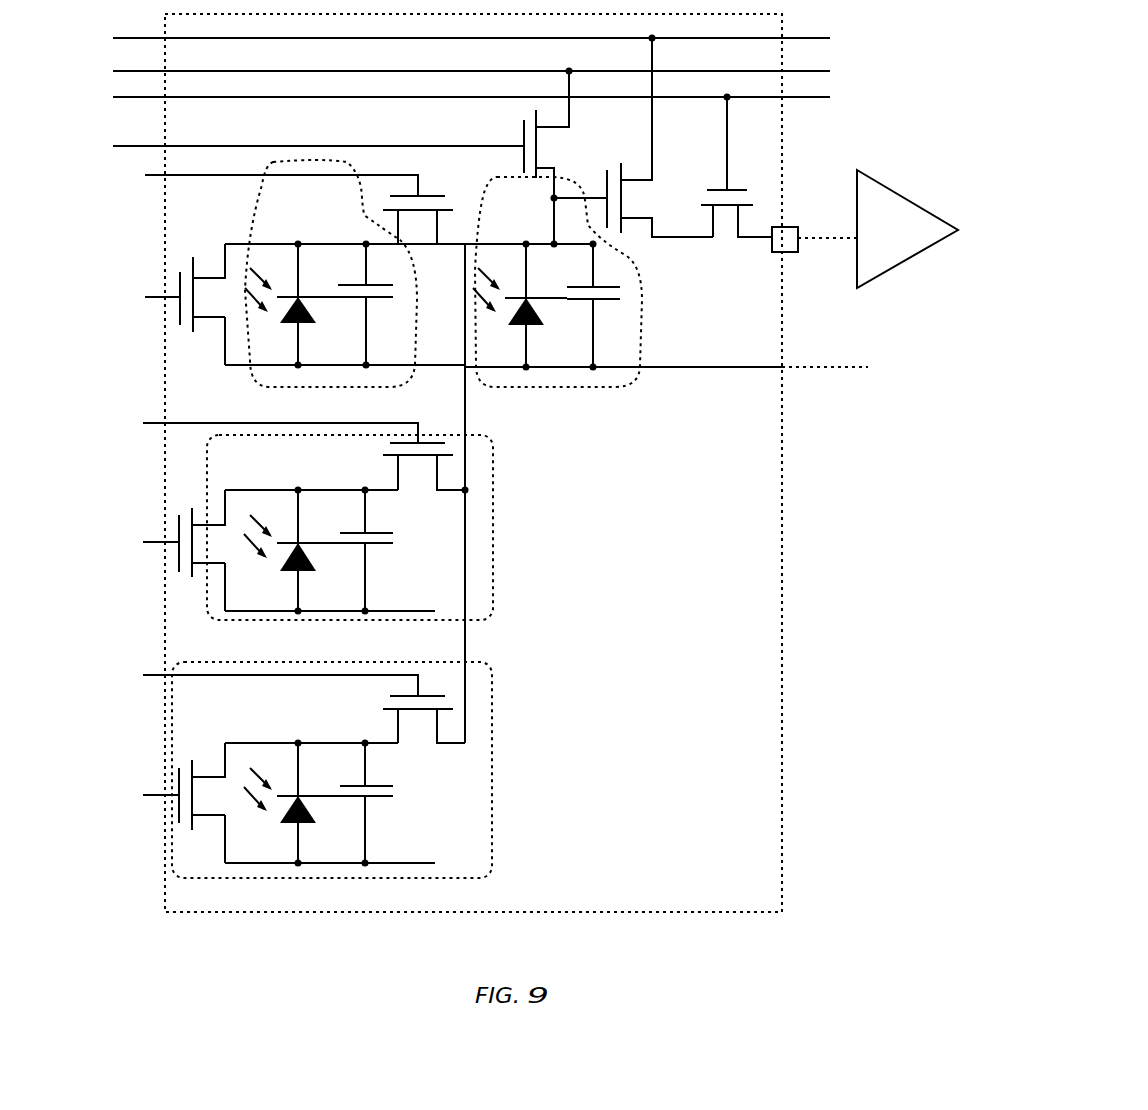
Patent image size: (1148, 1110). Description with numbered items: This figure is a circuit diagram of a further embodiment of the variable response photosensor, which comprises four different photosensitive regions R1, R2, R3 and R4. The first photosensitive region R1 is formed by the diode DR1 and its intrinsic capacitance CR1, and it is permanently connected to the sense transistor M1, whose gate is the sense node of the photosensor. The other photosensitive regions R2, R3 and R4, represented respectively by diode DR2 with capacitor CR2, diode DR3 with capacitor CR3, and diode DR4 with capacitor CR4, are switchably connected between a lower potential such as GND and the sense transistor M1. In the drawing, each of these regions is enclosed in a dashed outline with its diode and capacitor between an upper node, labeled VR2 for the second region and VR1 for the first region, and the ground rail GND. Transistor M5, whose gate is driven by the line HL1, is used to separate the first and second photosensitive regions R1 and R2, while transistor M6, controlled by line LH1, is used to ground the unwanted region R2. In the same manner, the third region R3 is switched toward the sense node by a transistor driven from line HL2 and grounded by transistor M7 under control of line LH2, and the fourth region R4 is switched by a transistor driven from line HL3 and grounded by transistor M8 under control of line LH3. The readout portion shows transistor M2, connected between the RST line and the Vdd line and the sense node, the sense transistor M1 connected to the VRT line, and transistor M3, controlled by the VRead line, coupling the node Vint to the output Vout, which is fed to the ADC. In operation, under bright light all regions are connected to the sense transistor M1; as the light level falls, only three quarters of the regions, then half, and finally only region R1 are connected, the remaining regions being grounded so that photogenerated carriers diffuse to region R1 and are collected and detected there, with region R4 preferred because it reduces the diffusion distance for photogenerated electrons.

The sense transistor M1 is at (660, 136).
The transistor M2 is at (547, 158).
The transistor M3 is at (737, 166).
The transistor M5 is at (424, 234).
The transistor M6 is at (202, 284).
The transistor M7 is at (201, 528).
The transistor M8 is at (202, 783).
The first photosensitive region R1 is at (666, 298).
The second photosensitive region R2 is at (322, 289).
The third photosensitive region R3 is at (347, 527).
The fourth photosensitive region R4 is at (345, 770).
The diode DR1 is at (521, 306).
The diode DR2 is at (294, 305).
The diode DR3 is at (293, 551).
The diode DR4 is at (293, 803).
The intrinsic capacitance CR1 is at (606, 306).
The capacitor CR2 is at (380, 305).
The capacitor CR3 is at (379, 551).
The capacitor CR4 is at (381, 803).
The node VR1 is at (532, 232).
The node VR2 is at (344, 230).
The Vint node Vint is at (691, 259).
The Vout output Vout is at (814, 232).
The element ADC is at (907, 229).
The ground GND is at (666, 352).
The VRT line VRT is at (452, 40).
The Vdd line Vdd is at (452, 69).
The VRead line VRead is at (441, 95).
The RST line RST is at (299, 147).
The HL1 line HL1 is at (265, 182).
The HL2 line HL2 is at (264, 430).
The HL3 line HL3 is at (264, 683).
The LH1 line LH1 is at (142, 298).
The LH2 line LH2 is at (142, 545).
The LH3 line LH3 is at (142, 799).